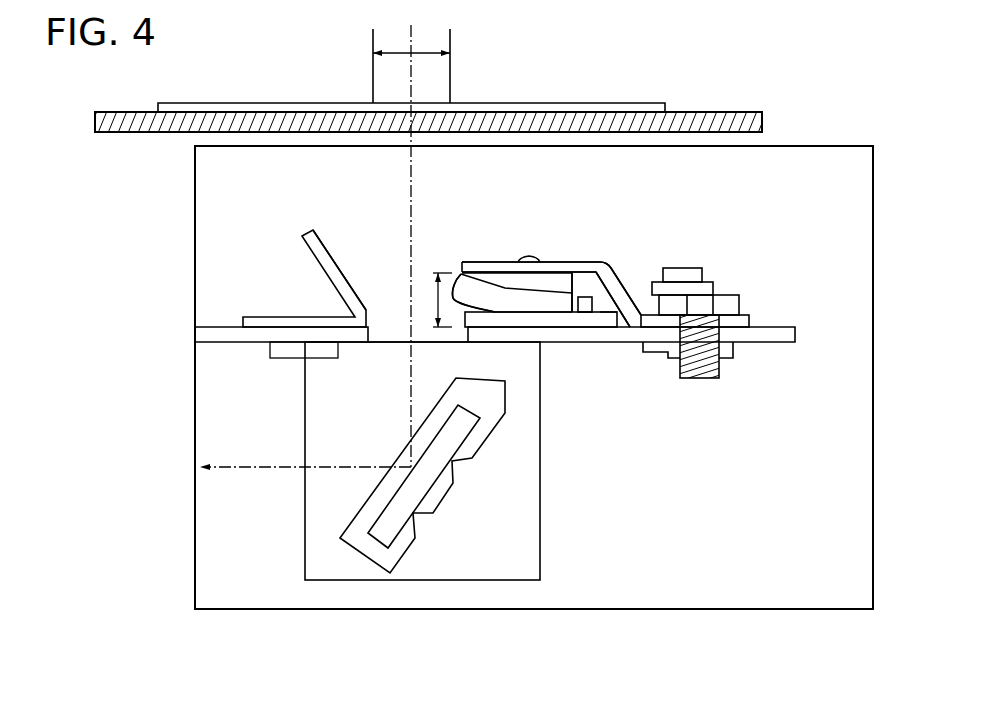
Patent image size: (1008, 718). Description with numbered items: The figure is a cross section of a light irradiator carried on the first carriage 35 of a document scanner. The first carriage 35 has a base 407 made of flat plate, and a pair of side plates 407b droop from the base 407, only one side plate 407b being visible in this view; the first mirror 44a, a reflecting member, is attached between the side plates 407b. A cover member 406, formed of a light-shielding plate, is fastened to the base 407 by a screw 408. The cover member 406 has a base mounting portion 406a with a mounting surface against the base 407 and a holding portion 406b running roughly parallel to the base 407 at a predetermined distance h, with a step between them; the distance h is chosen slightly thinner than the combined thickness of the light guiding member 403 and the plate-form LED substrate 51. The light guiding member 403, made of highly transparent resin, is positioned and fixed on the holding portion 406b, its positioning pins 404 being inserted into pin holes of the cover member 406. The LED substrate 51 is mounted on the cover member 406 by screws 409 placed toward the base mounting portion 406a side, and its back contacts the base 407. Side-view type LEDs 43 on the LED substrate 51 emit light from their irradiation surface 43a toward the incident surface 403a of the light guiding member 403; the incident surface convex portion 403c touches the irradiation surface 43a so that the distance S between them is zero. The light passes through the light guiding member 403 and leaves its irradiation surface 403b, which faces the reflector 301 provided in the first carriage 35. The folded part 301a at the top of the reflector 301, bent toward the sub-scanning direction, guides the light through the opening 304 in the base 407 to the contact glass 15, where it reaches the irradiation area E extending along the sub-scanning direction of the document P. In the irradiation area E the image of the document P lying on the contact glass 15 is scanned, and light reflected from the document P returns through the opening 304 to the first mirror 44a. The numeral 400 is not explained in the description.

The contact glass 15 is at (705, 112).
The document P is at (607, 103).
The irradiation area E is at (411, 66).
The first carriage 35 is at (702, 609).
The reflector 301 is at (295, 248).
The folded part 301a is at (347, 278).
The opening 304 is at (403, 343).
The detection unit 400 is at (774, 207).
The light guiding member 403 is at (505, 278).
The incident surface 403a is at (585, 290).
The irradiation surface 403b is at (456, 274).
The incident surface convex portion 403c is at (583, 288).
The positioning pin 404 is at (530, 258).
The cover member 406 is at (633, 287).
The base mounting portion 406a is at (750, 322).
The holding portion 406b is at (490, 262).
The base 407 is at (738, 343).
The side plate 407b is at (540, 532).
The screw 408 is at (727, 292).
The screw 409 is at (685, 267).
The LED 43 is at (587, 327).
The irradiation surface 43a is at (547, 314).
The first mirror 44a is at (428, 480).
The LED substrate 51 is at (605, 322).
The distance S is at (577, 320).
The distance h is at (436, 300).